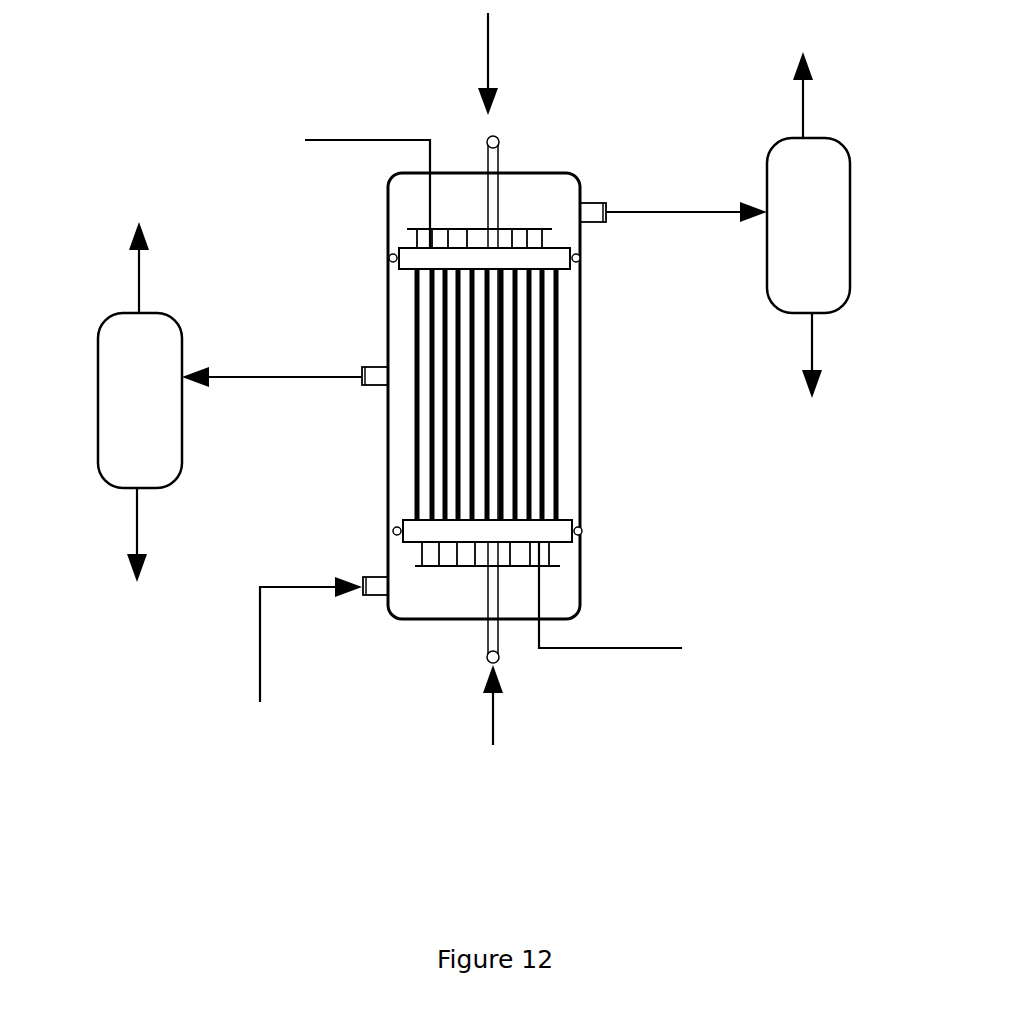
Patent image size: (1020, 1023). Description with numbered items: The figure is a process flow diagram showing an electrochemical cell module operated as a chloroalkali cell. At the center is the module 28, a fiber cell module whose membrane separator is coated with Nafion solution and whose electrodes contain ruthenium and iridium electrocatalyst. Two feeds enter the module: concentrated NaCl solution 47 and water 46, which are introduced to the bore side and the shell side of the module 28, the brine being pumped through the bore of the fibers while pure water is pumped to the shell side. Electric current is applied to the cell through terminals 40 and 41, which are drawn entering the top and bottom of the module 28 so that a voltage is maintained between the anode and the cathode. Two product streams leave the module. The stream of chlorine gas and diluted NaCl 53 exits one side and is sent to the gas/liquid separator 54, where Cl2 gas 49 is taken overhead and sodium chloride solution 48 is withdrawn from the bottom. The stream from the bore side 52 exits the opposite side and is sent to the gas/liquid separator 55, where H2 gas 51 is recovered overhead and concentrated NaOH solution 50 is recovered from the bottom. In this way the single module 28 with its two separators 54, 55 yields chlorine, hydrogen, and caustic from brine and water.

The module 28 is at (641, 451).
The terminal 40 is at (360, 138).
The terminal 41 is at (632, 647).
The water 46 is at (489, 32).
The concentrated NaCl solution 47 is at (263, 634).
The sodium chloride solution 48 is at (135, 512).
The Cl2 gas 49 is at (135, 288).
The concentrated NaOH solution 50 is at (813, 330).
The H2 gas 51 is at (797, 115).
The stream from bore side 52 is at (640, 212).
The stream of chlorine gas and diluted NaCl 53 is at (240, 377).
The gas/liquid separator 54 is at (98, 353).
The gas/liquid separator 55 is at (847, 157).